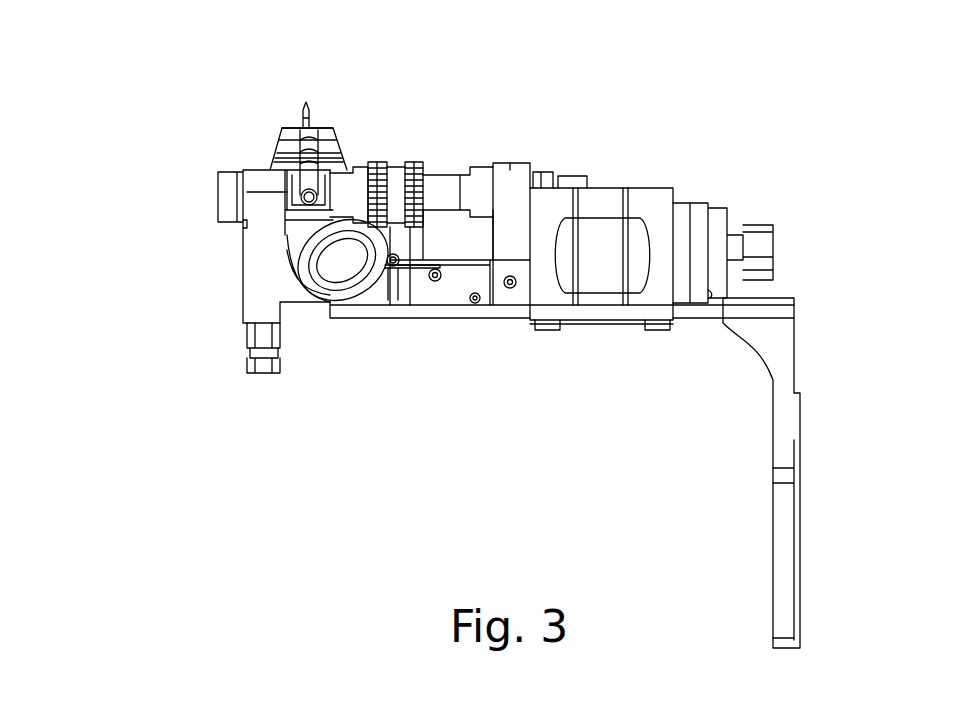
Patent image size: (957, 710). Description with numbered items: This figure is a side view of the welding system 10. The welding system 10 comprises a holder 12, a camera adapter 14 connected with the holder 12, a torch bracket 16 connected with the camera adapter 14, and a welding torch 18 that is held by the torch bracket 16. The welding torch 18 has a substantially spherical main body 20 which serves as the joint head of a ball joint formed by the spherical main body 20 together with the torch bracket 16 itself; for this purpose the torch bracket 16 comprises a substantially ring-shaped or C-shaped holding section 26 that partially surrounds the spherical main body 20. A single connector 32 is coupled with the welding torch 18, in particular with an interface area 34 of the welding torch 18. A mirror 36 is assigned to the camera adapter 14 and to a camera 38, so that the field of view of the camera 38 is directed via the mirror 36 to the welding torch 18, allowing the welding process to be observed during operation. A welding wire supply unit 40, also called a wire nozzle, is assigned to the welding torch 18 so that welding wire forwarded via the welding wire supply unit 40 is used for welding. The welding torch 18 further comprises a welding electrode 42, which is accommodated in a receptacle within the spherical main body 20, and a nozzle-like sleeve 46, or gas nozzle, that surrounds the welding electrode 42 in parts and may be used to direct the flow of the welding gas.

The welding system 10 is at (232, 88).
The holder 12 is at (783, 410).
The camera adapter 14 is at (438, 325).
The torch bracket 16 is at (210, 207).
The welding torch 18 is at (275, 130).
The substantially spherical main body 20 is at (268, 165).
The holding section 26 is at (228, 180).
The single connector 32 is at (510, 175).
The interface area 34 is at (410, 148).
The mirror 36 is at (352, 262).
The camera 38 is at (453, 225).
The welding wire supply unit 40 is at (303, 142).
The welding electrode 42 is at (312, 110).
The nozzle-like sleeve 46 is at (333, 128).